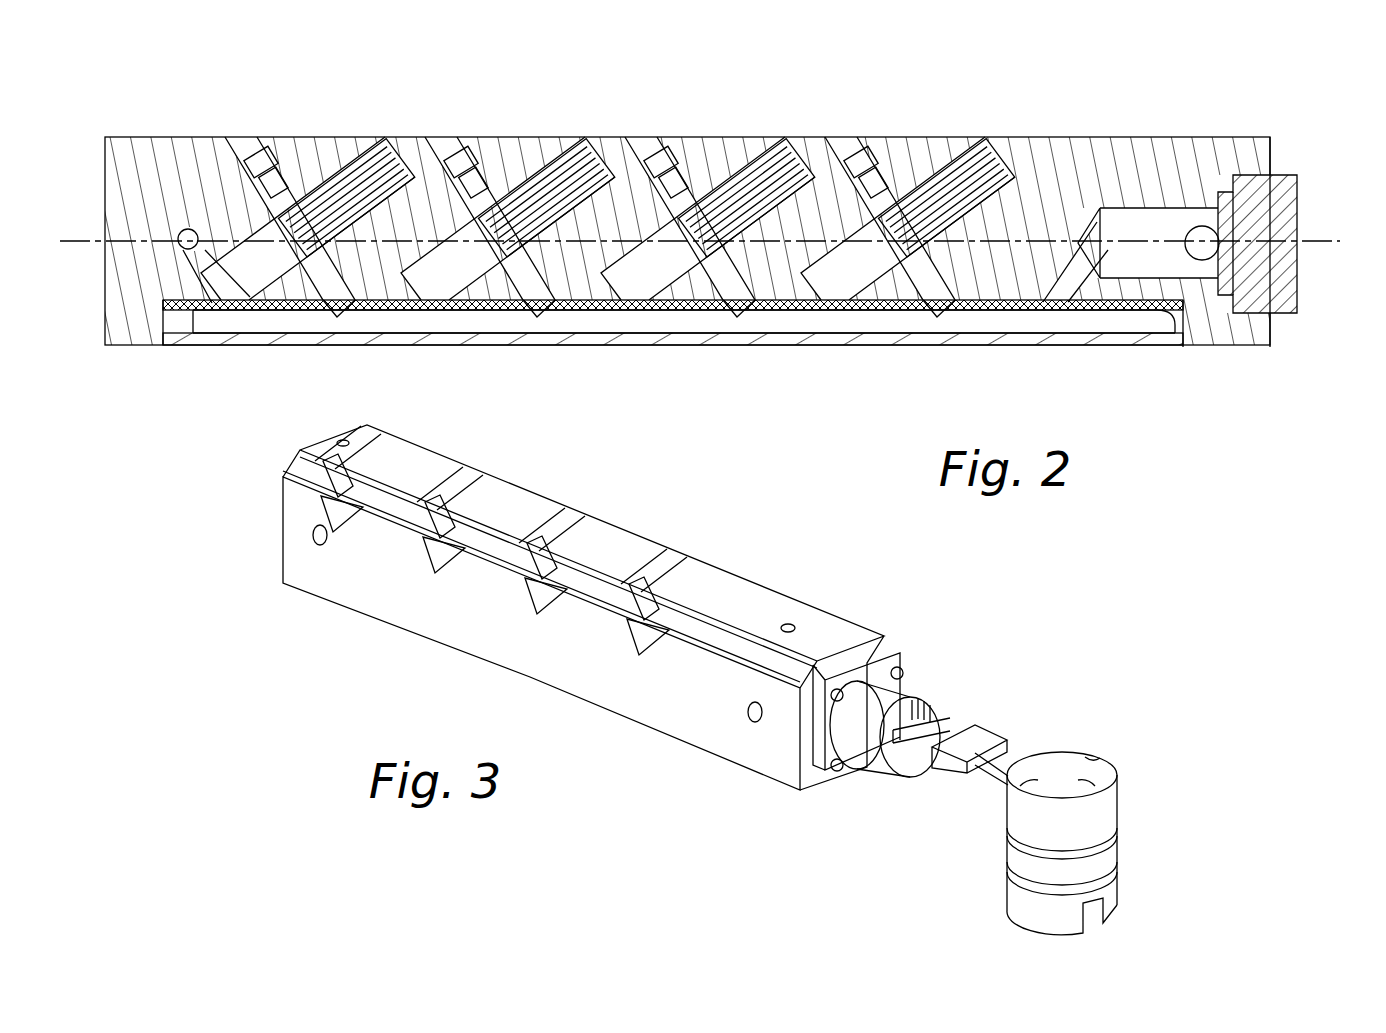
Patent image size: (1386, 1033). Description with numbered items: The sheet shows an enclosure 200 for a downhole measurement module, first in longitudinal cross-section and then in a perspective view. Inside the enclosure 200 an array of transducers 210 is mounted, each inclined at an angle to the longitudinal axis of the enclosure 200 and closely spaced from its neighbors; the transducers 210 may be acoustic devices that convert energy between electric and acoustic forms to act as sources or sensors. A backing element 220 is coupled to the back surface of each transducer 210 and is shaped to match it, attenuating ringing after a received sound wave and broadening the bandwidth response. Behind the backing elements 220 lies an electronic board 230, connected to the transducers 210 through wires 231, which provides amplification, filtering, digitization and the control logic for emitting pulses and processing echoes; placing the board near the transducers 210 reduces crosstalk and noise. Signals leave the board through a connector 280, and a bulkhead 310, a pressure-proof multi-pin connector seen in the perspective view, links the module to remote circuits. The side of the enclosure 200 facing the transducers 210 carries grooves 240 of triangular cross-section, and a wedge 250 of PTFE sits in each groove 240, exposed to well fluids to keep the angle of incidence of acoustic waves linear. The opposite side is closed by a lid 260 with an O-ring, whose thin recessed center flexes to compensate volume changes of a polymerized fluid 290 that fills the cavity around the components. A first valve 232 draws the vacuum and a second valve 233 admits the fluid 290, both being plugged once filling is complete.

In FIG. 2, the enclosure 200 is at (250, 118).
In FIG. 3, the enclosure 200 is at (848, 576).
In FIG. 2, the transducer 210 is at (363, 137).
In FIG. 2, the backing element 220 is at (335, 305).
In FIG. 2, the electronic board 230 is at (190, 316).
In FIG. 2, the wires 231 is at (457, 285).
In FIG. 3, the first valve 232 is at (746, 712).
In FIG. 3, the second valve 233 is at (328, 545).
In FIG. 2, the groove 240 is at (328, 137).
In FIG. 2, the wedge 250 is at (280, 137).
In FIG. 2, the lid 260 is at (985, 345).
In FIG. 2, the connector 280 is at (1300, 216).
In FIG. 3, the connector 280 is at (915, 700).
In FIG. 2, the fluid 290 is at (1062, 180).
In FIG. 3, the bulkhead 310 is at (1118, 805).